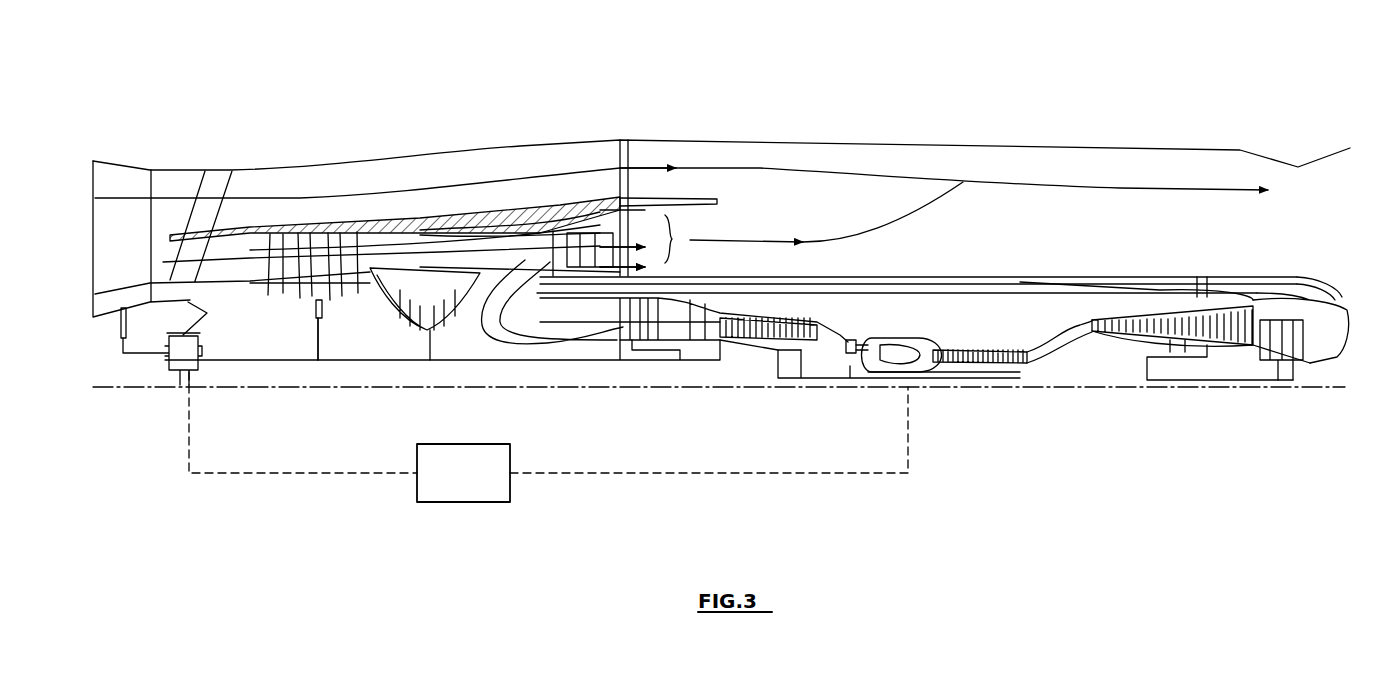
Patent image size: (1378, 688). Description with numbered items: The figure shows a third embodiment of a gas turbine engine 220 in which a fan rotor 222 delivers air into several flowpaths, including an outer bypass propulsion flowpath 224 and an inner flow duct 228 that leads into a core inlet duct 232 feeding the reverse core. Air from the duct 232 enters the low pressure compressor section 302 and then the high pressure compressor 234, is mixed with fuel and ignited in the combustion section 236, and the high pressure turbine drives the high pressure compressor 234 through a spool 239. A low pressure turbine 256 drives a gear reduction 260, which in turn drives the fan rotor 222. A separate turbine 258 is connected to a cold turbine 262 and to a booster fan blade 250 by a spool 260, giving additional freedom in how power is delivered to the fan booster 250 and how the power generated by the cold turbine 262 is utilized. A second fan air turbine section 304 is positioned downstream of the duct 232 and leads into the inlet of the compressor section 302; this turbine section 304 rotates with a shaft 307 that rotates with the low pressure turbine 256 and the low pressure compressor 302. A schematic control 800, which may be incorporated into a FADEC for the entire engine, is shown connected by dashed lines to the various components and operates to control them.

The gas turbine engine 220 is at (748, 108).
The fan rotor 222 is at (118, 192).
The outer bypass propulsion flowpath 224 is at (926, 171).
The inner flow duct 228 is at (990, 278).
The core inlet duct 232 is at (1310, 293).
The high pressure compressor 234 is at (987, 350).
The combustion section 236 is at (884, 368).
The spool 239 is at (975, 375).
The booster fan blade 250 is at (306, 298).
The low pressure turbine 256 is at (722, 310).
The separate turbine 258 is at (277, 368).
The gear reduction 260 is at (185, 348).
The cold turbine 262 is at (430, 340).
The low pressure compressor section 302 is at (1120, 337).
The second fan air turbine section 304 is at (1280, 362).
The shaft 307 is at (1205, 372).
The schematic control 800 is at (483, 484).